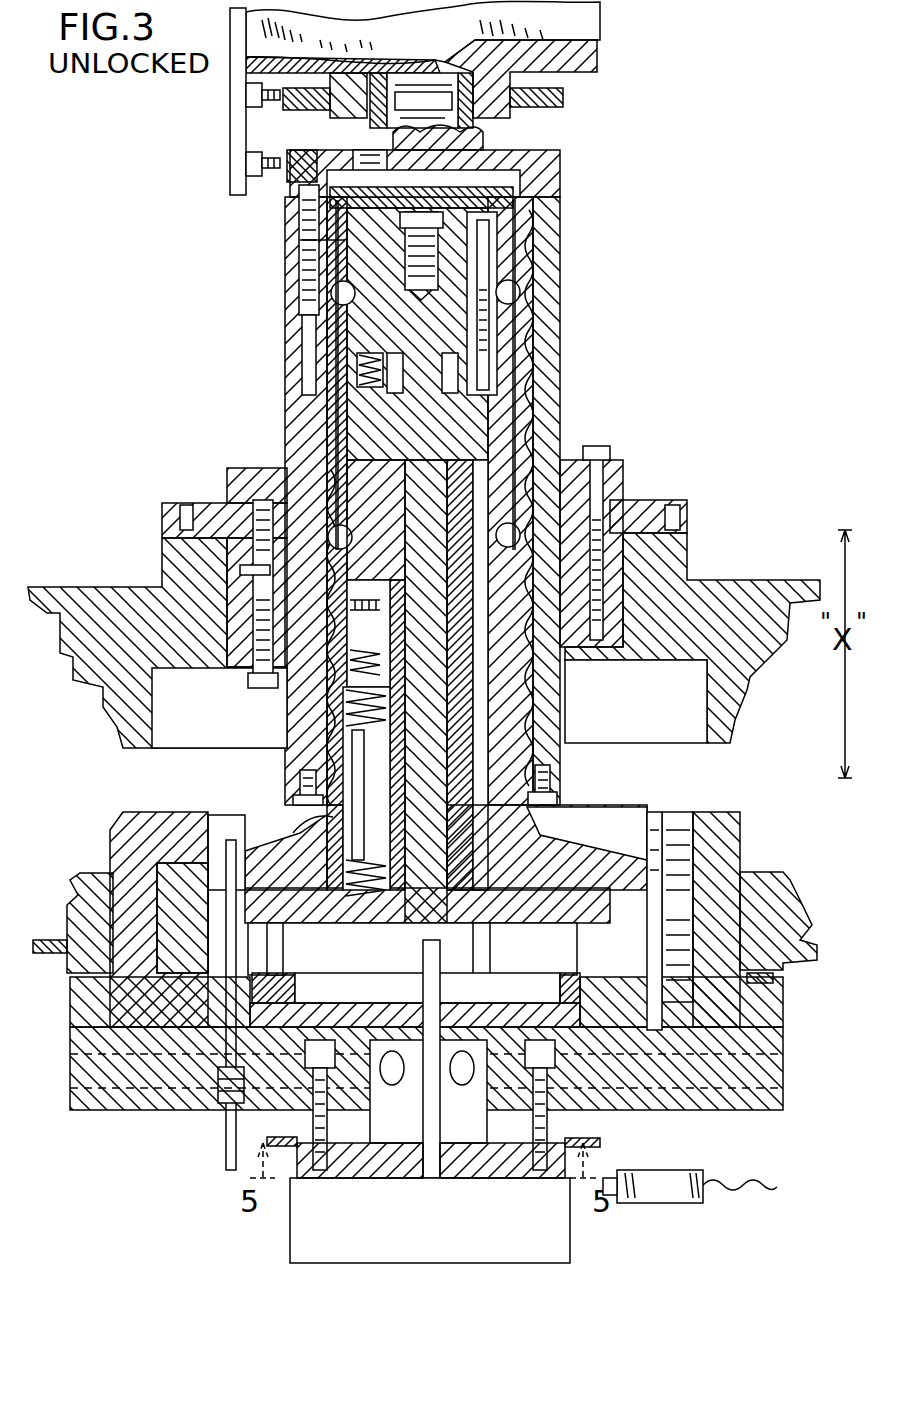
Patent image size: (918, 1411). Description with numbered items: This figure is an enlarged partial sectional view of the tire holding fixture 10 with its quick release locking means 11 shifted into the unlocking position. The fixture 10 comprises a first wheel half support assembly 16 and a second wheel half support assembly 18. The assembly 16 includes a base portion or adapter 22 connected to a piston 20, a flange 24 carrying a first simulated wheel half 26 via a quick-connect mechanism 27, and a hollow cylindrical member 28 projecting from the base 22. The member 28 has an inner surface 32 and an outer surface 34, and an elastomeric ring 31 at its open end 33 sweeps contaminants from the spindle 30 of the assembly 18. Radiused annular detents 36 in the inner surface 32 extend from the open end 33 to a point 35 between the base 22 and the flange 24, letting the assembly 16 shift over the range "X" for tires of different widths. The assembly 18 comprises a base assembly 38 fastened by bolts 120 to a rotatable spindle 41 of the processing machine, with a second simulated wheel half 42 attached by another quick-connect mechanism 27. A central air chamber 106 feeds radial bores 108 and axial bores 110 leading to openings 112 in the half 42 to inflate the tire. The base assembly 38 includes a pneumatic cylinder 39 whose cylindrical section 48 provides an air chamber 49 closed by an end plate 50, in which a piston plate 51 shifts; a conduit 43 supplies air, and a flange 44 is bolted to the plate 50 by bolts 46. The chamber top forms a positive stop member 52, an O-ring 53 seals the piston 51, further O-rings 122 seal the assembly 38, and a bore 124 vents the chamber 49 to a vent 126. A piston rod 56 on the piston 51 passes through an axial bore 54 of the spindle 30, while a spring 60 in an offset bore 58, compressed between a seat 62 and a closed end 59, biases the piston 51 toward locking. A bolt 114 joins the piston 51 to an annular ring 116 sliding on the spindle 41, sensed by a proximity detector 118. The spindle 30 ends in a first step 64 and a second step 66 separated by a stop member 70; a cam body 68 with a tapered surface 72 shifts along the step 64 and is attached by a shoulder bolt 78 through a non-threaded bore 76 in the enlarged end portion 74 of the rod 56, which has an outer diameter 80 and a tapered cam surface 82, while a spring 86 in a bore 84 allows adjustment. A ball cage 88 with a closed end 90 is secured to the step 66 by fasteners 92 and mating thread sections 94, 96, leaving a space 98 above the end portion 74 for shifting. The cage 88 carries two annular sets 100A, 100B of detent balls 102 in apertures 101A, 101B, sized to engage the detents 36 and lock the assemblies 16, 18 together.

The tire holding fixture 10 is at (704, 241).
The quick release locking means 11 is at (550, 152).
The first wheel half support assembly 16 is at (114, 572).
The second wheel half support assembly 18 is at (59, 971).
The piston 20 is at (597, 10).
The base portion or adapter 22 is at (300, 150).
The flange 24 is at (230, 468).
The first simulated annular wheel half 26 is at (40, 590).
The quick-connect mechanism 27 is at (253, 565).
The hollow cylindrical member 28 is at (275, 369).
The spindle or stub shaft 30 is at (300, 790).
The annular elastomeric ring 31 is at (300, 803).
The inner surface 32 is at (550, 775).
The open end 33 is at (578, 808).
The outer surface 34 is at (300, 775).
The point 35 is at (320, 283).
The annular detents 36 is at (325, 430).
The base assembly 38 is at (263, 1100).
The pneumatic cylinder 39 is at (482, 1003).
The rotatable spindle 41 is at (575, 1245).
The second simulated annular wheel half 42 is at (67, 890).
The conduit 43 is at (450, 1178).
The projecting member or flange 44 is at (180, 1030).
The bolts 46 is at (590, 1060).
The enlarged head or cylindrical section 48 is at (215, 860).
The air chamber 49 is at (375, 990).
The end plate 50 is at (435, 930).
The piston disc or plate 51 is at (400, 930).
The positive stop member 52 is at (560, 845).
The annular gasket or O-ring 53 is at (288, 925).
The axial bore 54 is at (366, 791).
The piston rod 56 is at (520, 420).
The cylindrical bore 58 is at (300, 835).
The closed end 59 is at (370, 795).
The spring 60 is at (340, 727).
The retention area or seat 62 is at (368, 928).
The first step 64 is at (505, 383).
The second step 66 is at (600, 612).
The cam member 68 is at (515, 400).
The positive stop member 70 is at (378, 612).
The tapered surface 72 is at (525, 437).
The enlarged integral end portion 74 is at (513, 196).
The non-threaded bore 76 is at (443, 232).
The shoulder bolt 78 is at (497, 216).
The outer diameter 80 is at (300, 240).
The tapered cam surface 82 is at (305, 262).
The bore 84 is at (365, 370).
The spring 86 is at (340, 405).
The ball cage 88 is at (530, 325).
The closed end 90 is at (520, 190).
The fasteners 92 is at (369, 659).
The annular thread section 94 is at (591, 684).
The complementary thread section 96 is at (330, 700).
The space 98 is at (300, 216).
The annular set of detent balls 100A is at (340, 293).
The annular set of detent balls 100B is at (220, 498).
The annular set of apertures 101A is at (335, 320).
The annular set of apertures 101B is at (250, 584).
The detent balls 102 is at (512, 292).
The air chamber 106 is at (400, 1143).
The radial bores 108 is at (95, 1110).
The axial bores 110 is at (70, 1020).
The openings 112 is at (113, 830).
The bolt 114 is at (490, 950).
The annular ring 116 is at (290, 1148).
The proximity detector 118 is at (660, 1203).
The bolts 120 is at (325, 1170).
The O-rings 122 is at (565, 985).
The bore 124 is at (162, 862).
The vent 126 is at (230, 1105).